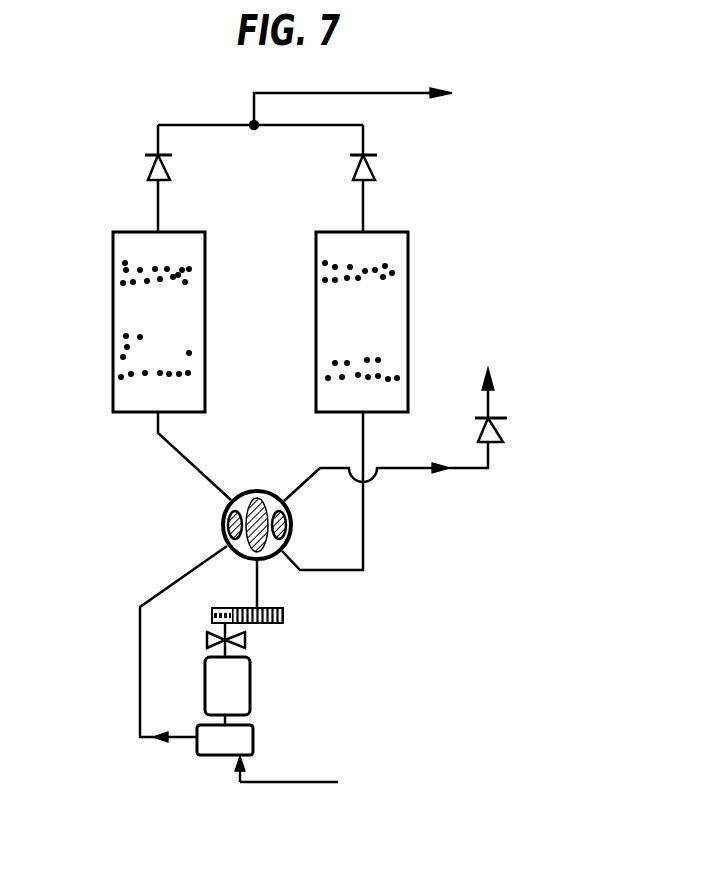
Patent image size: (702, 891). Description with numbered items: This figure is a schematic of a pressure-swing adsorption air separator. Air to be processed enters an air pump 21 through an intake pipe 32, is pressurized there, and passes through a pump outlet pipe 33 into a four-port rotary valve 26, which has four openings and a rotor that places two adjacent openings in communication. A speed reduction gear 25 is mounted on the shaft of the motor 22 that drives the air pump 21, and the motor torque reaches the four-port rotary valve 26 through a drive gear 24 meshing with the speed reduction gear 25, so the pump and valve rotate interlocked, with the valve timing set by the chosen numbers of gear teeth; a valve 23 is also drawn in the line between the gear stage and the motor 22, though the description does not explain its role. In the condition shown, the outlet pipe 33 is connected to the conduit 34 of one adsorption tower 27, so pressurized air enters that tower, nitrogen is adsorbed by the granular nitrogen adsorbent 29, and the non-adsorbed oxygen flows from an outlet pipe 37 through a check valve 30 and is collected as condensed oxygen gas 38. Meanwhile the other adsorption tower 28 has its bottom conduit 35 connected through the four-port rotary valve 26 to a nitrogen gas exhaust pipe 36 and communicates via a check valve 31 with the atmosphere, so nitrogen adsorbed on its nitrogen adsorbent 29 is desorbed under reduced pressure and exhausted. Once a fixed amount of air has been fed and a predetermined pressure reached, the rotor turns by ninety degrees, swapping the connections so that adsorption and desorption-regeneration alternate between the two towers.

The air pump 21 is at (250, 736).
The motor 22 is at (252, 680).
The valve 23 is at (248, 636).
The drive gear 24 is at (215, 607).
The speed reduction gear 25 is at (275, 607).
The four-port rotary valve 26 is at (225, 515).
The adsorption tower 27 is at (113, 336).
The adsorption tower 28 is at (408, 326).
The granular nitrogen adsorbent 29 is at (122, 272).
The check valve 30 is at (170, 171).
The check valve 31 is at (500, 433).
The intake pipe 32 is at (263, 785).
The pump outlet pipe 33 is at (140, 628).
The conduit 34 is at (150, 434).
The conduit 35 is at (363, 562).
The nitrogen gas exhaust pipe 36 is at (408, 470).
The outlet pipe 37 is at (158, 203).
The condensed oxygen gas 38 is at (380, 93).